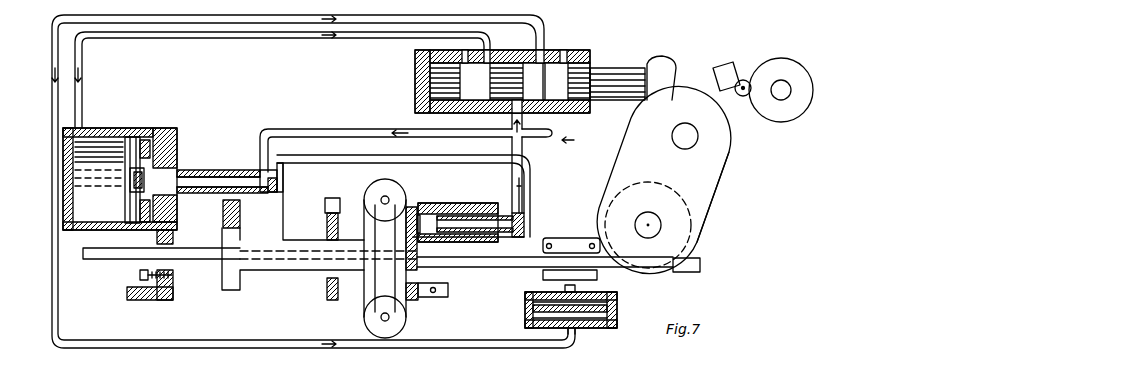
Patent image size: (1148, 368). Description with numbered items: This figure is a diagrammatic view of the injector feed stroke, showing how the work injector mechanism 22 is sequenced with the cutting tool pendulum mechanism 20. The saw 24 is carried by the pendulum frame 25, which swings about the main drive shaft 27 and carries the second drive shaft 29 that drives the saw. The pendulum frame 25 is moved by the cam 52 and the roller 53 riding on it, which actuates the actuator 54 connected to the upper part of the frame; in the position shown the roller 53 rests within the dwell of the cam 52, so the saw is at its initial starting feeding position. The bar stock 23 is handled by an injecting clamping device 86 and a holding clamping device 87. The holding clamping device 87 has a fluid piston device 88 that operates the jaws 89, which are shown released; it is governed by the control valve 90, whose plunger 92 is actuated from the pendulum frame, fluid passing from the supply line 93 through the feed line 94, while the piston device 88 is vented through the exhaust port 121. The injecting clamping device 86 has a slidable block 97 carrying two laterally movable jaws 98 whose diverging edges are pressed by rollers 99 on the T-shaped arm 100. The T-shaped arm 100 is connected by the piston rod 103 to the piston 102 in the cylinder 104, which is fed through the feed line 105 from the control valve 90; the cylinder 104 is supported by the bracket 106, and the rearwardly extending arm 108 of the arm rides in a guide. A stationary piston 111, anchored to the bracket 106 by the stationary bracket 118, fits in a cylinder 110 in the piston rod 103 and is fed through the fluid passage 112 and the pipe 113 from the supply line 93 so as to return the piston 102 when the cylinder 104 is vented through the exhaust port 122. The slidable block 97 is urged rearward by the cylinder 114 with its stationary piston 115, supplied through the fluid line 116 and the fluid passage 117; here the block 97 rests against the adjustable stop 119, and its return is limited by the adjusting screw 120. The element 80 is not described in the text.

The cutting tool pendulum mechanism 20 is at (674, 180).
The work injector mechanism 22 is at (362, 263).
The bar stock 23 is at (471, 258).
The saw 24 is at (691, 231).
The pendulum frame 25 is at (712, 204).
The main drive shaft 27 is at (698, 142).
The second drive shaft 29 is at (655, 231).
The cam 52 is at (791, 70).
The roller 53 is at (747, 80).
The actuator 54 is at (742, 80).
The follower 80 is at (665, 58).
The injecting clamping device 86 is at (400, 201).
The holding clamping device 87 is at (617, 325).
The fluid piston device 88 is at (617, 311).
The jaws 89 is at (543, 281).
The control valve 90 is at (413, 94).
The plunger 92 is at (618, 72).
The supply line 93 is at (553, 140).
The feed line 94 is at (454, 347).
The slidable block 97 is at (327, 290).
The laterally movable jaws 98 is at (330, 221).
The rollers 99 is at (404, 194).
The T-shaped arm 100 is at (440, 217).
The piston 102 is at (152, 132).
The piston rod 103 is at (205, 168).
The cylinder 104 is at (110, 128).
The feed line 105 is at (273, 38).
The bracket 106 is at (180, 130).
The rearwardly extending arm 108 is at (281, 270).
The cylinder 110 is at (185, 200).
The stationary piston 111 is at (252, 193).
The fluid passage 112 is at (252, 193).
The pipe 113 is at (353, 131).
The cylinder 114 is at (482, 204).
The stationary piston 115 is at (515, 237).
The fluid line 116 is at (531, 201).
The fluid passage 117 is at (458, 244).
The stationary bracket 118 is at (452, 161).
The adjustable stop 119 is at (449, 289).
The adjusting screw 120 is at (141, 276).
The exhaust port 121 is at (564, 50).
The exhaust port 122 is at (470, 50).